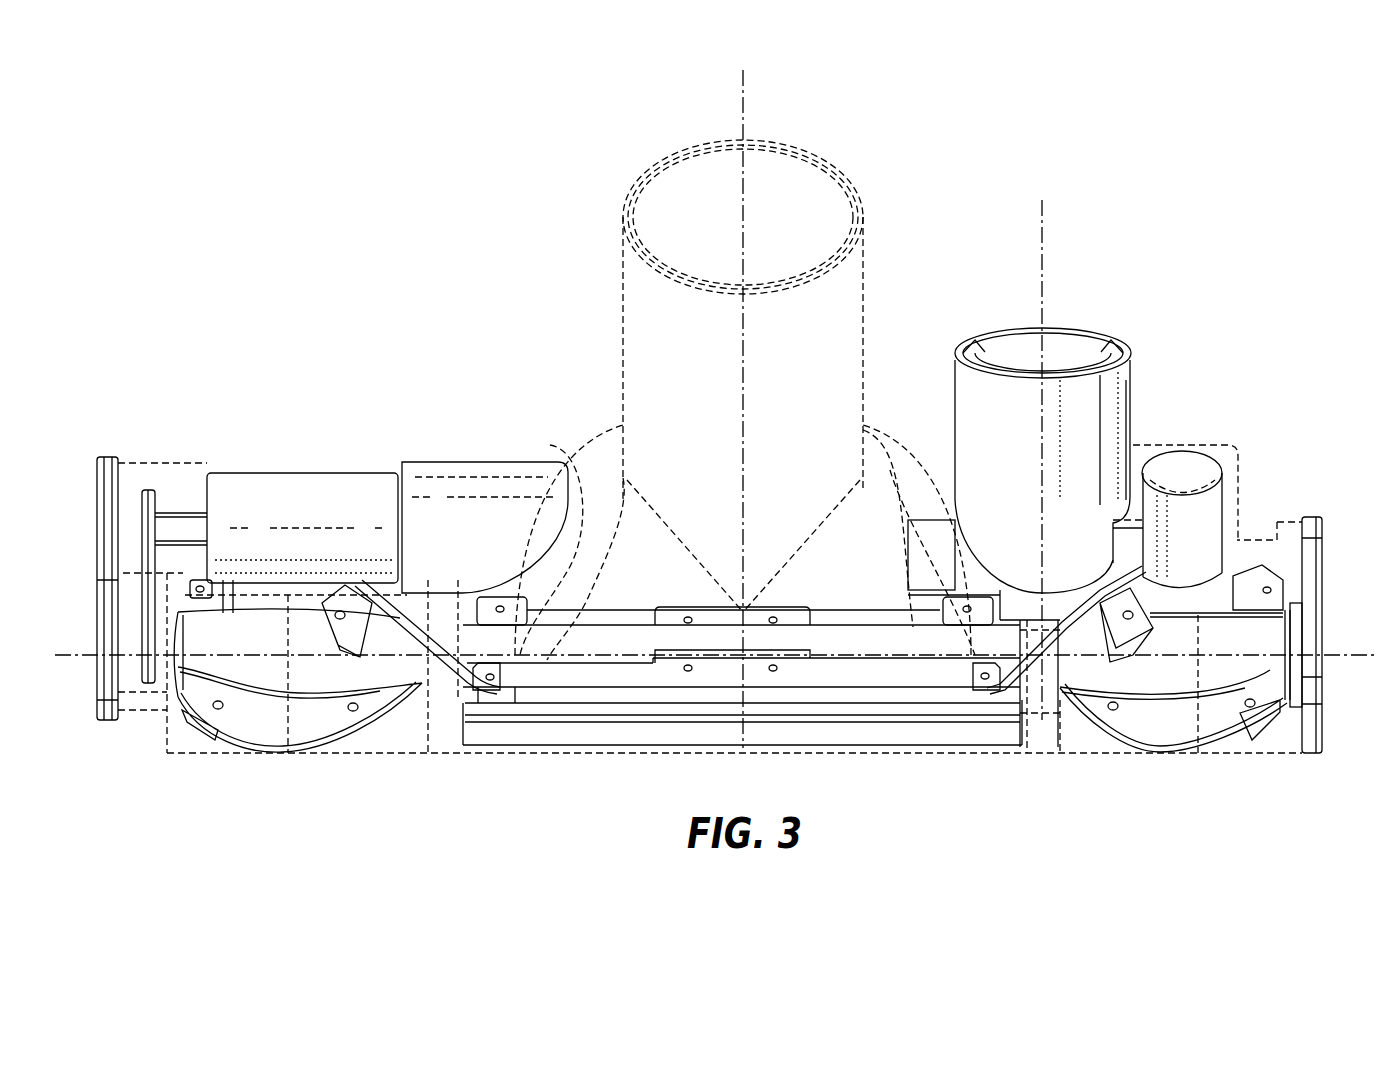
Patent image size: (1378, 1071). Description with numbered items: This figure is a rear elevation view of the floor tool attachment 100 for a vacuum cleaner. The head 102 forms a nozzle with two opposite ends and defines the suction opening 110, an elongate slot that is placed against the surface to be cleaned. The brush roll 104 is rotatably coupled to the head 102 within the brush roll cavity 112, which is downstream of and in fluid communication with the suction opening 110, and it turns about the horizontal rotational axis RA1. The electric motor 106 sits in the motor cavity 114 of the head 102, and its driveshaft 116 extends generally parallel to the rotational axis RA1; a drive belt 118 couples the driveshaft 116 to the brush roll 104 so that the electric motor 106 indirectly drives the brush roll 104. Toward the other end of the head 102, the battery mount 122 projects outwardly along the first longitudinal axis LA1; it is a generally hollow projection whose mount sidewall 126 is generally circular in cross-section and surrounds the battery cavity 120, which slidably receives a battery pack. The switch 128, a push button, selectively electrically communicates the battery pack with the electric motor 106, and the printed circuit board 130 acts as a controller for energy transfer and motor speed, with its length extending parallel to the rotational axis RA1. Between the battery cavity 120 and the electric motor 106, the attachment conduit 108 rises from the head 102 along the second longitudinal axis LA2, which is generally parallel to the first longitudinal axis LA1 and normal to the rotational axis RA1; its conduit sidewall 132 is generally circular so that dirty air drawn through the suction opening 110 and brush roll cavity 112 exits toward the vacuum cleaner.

The floor tool attachment 100 is at (385, 152).
The head 102 is at (623, 567).
The brush roll 104 is at (242, 672).
The electric motor 106 is at (350, 515).
The attachment conduit 108 is at (623, 282).
The suction opening 110 is at (873, 762).
The brush roll cavity 112 is at (552, 680).
The motor cavity 114 is at (293, 452).
The driveshaft 116 is at (188, 513).
The drive belt 118 is at (148, 585).
The battery cavity 120 is at (1102, 318).
The battery mount 122 is at (1112, 405).
The mount sidewall 126 is at (978, 345).
The switch 128 is at (1182, 470).
The printed circuit board 130 is at (935, 535).
The conduit sidewall 132 is at (862, 180).
The first longitudinal axis LA1 is at (1045, 288).
The second longitudinal axis LA2 is at (740, 158).
The rotational axis RA1 is at (1345, 652).